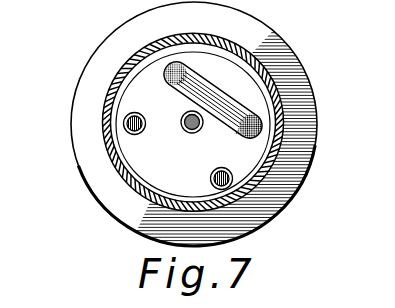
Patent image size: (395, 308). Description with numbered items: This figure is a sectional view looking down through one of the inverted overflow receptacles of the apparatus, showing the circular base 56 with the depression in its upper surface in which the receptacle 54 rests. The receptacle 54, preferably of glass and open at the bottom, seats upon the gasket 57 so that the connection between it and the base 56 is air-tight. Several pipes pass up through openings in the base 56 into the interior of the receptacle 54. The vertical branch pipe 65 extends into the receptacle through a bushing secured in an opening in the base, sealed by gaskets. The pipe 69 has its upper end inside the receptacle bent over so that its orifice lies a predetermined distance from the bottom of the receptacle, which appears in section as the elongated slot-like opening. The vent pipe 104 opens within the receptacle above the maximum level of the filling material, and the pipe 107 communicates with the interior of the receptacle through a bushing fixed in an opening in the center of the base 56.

The base 56 is at (105, 45).
The inverted overflow receptacle 54 is at (270, 85).
The gasket 57 is at (138, 182).
The pipe 69 is at (248, 108).
The vent pipe 104 is at (142, 134).
The pipe 107 is at (200, 129).
The vertical branch pipe 65 is at (236, 187).